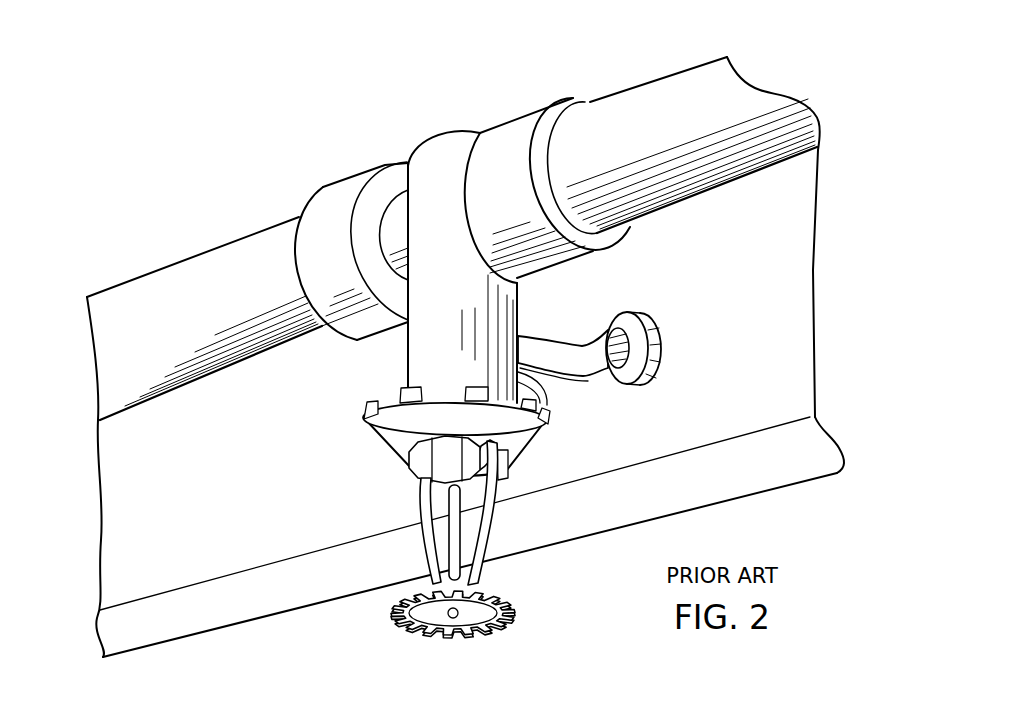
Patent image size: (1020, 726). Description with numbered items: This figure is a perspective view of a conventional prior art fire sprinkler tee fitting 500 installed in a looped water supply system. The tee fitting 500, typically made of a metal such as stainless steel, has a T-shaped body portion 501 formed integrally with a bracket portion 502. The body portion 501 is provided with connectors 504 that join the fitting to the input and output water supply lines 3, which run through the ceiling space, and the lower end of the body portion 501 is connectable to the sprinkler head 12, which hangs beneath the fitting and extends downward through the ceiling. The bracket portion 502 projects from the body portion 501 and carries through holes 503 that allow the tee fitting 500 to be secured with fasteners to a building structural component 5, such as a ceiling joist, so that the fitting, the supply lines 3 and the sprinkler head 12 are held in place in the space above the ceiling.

The water supply lines 3 is at (243, 246).
The building structural component 5 is at (806, 306).
The sprinkler head 12 is at (364, 426).
The tee fitting 500 is at (478, 218).
The T-shaped body portion 501 is at (476, 301).
The bracket portion 502 is at (547, 352).
The through holes 503 is at (611, 333).
The connectors 504 is at (398, 207).